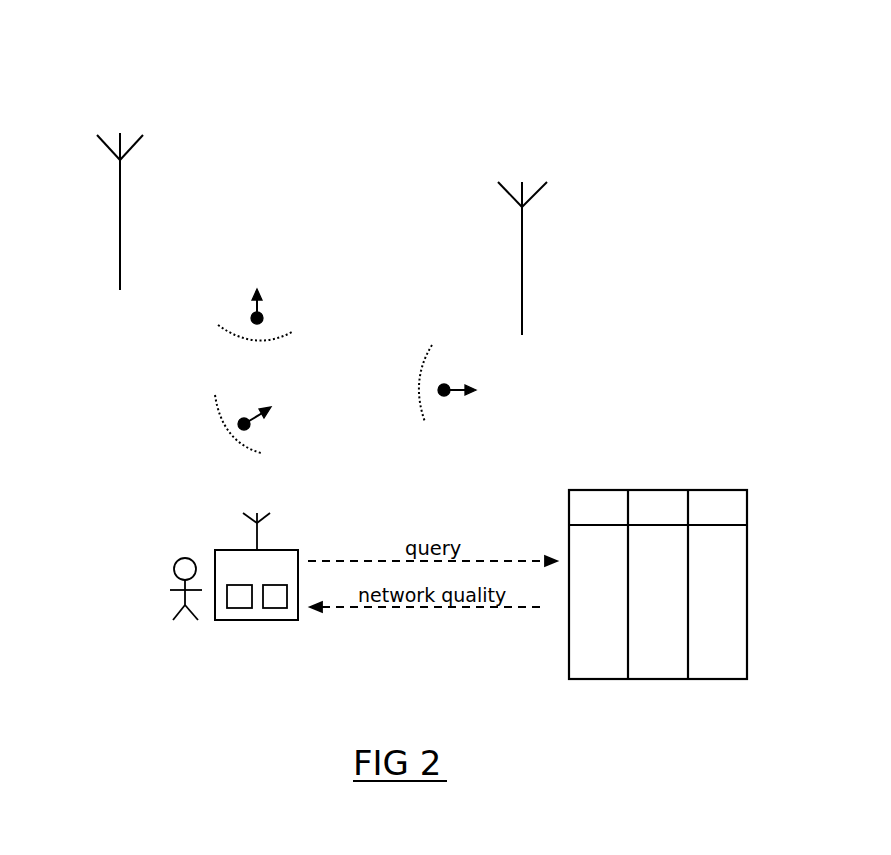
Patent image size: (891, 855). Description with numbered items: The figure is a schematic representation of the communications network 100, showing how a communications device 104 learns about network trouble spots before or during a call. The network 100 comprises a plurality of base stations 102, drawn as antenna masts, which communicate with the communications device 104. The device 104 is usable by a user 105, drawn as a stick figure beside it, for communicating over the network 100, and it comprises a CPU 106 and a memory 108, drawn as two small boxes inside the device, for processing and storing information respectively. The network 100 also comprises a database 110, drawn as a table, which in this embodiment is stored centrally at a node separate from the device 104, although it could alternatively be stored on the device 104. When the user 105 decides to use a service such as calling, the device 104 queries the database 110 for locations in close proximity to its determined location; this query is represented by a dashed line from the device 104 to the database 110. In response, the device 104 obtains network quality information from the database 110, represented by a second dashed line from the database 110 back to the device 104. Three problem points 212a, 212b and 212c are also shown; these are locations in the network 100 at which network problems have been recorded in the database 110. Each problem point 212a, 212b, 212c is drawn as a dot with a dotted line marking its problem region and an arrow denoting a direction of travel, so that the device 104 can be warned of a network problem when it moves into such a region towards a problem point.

The communications network 100 is at (406, 108).
The base stations 102 is at (120, 230).
The communications device 104 is at (239, 597).
The user 105 is at (167, 585).
The CPU 106 is at (242, 602).
The memory 108 is at (275, 602).
The database 110 is at (747, 607).
The problem point 212a is at (263, 313).
The problem point 212b is at (237, 432).
The problem point 212c is at (438, 396).